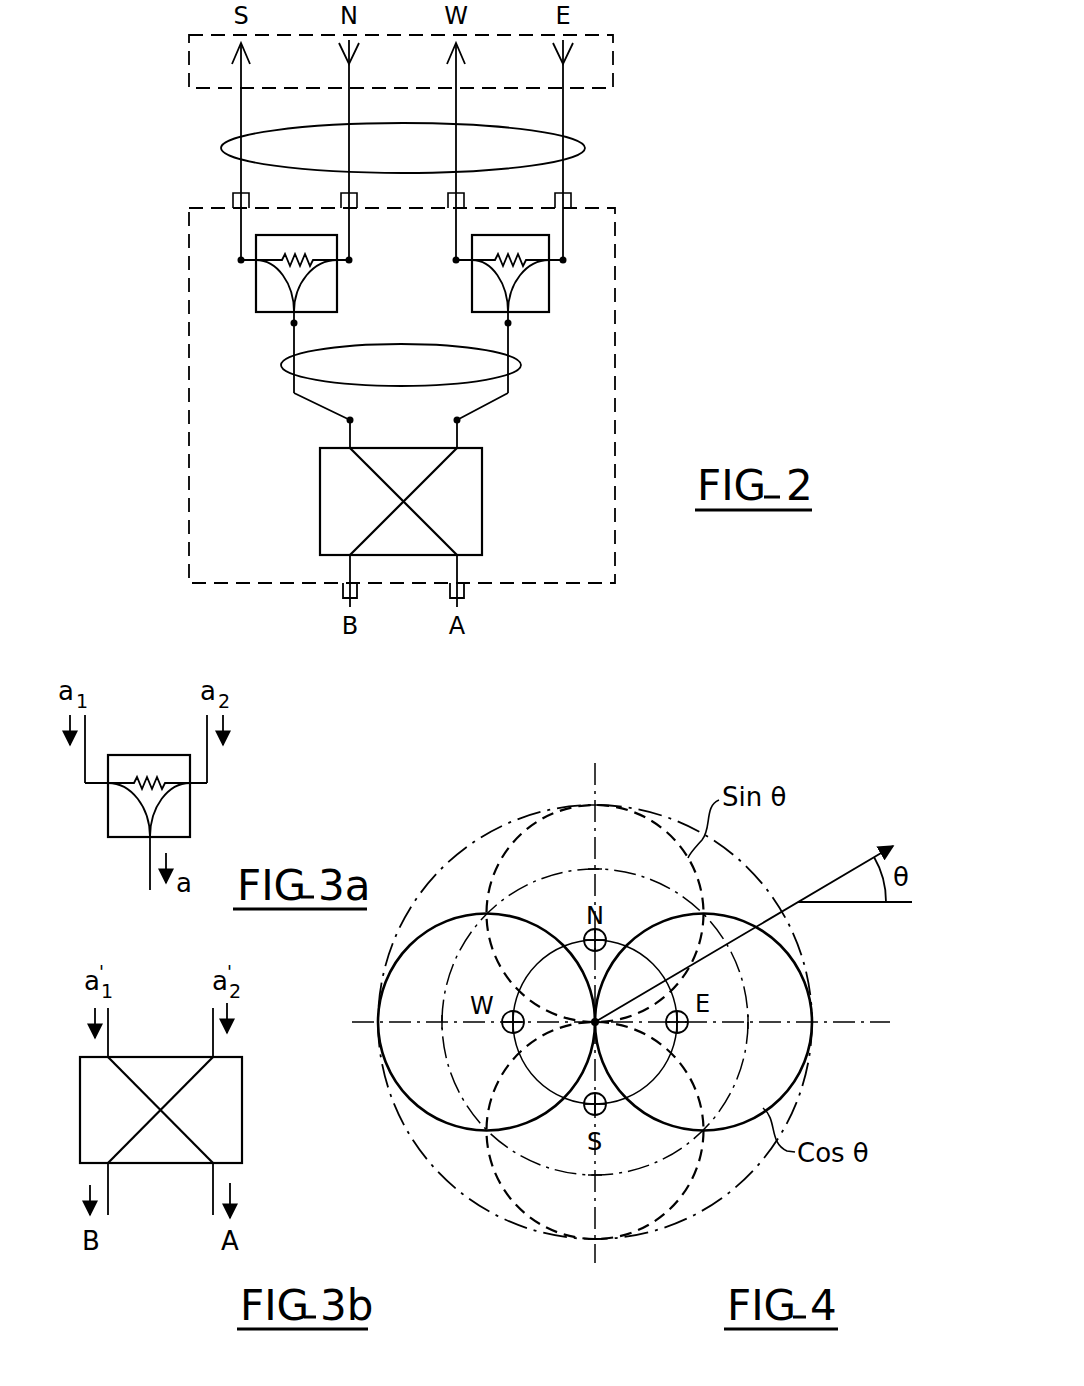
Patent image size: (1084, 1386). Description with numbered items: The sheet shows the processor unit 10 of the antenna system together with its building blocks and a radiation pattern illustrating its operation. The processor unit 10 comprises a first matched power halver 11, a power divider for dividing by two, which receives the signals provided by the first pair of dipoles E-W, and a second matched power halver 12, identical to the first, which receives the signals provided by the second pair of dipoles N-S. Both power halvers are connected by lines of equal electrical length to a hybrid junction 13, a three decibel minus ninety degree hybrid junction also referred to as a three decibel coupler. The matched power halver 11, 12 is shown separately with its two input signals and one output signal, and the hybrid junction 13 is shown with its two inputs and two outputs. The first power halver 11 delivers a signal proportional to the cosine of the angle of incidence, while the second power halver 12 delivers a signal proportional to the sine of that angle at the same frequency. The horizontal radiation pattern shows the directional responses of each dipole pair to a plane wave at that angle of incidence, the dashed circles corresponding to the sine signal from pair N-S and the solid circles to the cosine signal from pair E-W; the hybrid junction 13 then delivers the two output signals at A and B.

In FIG. 2, the processor unit 10 is at (615, 262).
In FIG. 2, the first matched power halver 11 is at (549, 296).
In FIG. 3a, the first matched power halver 11 is at (233, 802).
In FIG. 2, the second matched power halver 12 is at (337, 292).
In FIG. 3a, the second matched power halver 12 is at (146, 802).
In FIG. 2, the hybrid junction 13 is at (482, 516).
In FIG. 3b, the hybrid junction 13 is at (256, 1110).